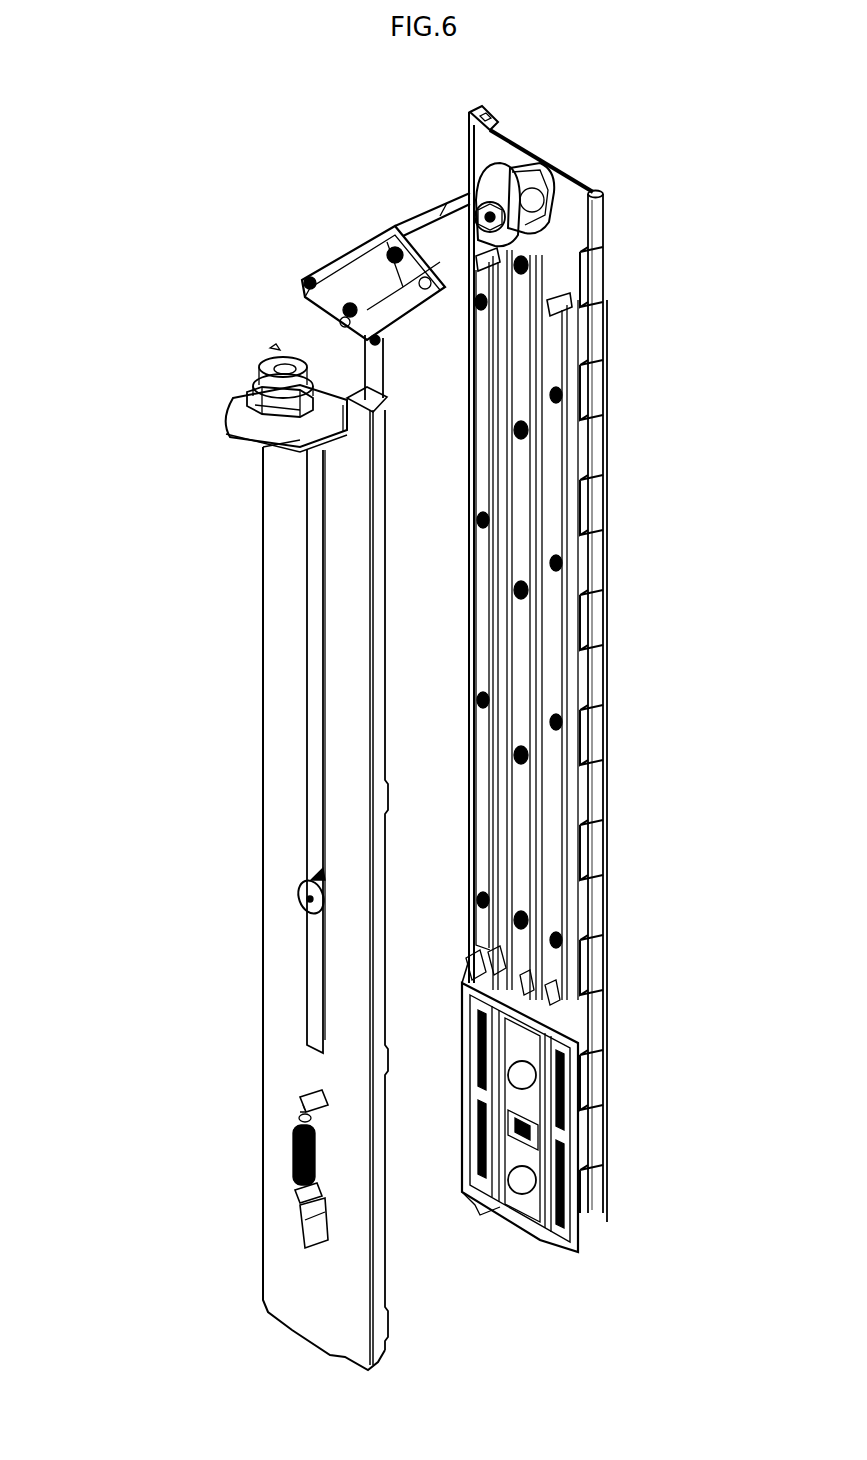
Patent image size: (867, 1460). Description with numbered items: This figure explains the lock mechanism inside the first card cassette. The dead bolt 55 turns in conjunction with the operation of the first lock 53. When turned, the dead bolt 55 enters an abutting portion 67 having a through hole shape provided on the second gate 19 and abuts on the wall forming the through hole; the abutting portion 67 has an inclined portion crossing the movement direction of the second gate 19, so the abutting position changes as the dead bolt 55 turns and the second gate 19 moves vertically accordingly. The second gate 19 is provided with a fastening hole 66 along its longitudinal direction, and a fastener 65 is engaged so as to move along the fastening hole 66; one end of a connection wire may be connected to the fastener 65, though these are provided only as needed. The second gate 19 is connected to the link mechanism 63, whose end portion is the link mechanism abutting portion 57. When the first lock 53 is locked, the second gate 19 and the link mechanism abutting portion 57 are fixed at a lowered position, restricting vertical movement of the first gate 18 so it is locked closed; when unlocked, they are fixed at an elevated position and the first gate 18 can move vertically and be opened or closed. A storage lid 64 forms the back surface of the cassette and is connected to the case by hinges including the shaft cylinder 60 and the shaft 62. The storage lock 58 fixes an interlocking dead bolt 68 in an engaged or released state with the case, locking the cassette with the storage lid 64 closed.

The first gate 18 is at (527, 1150).
The second gate 19 is at (307, 1298).
The first lock 53 is at (262, 372).
The dead bolt 55 is at (233, 432).
The link mechanism abutting portion 57 is at (537, 988).
The storage lock 58 is at (527, 187).
The shaft cylinder 60 is at (597, 230).
The shaft 62 is at (593, 280).
The link mechanism 63 is at (417, 213).
The storage lid 64 is at (490, 140).
The fastener 65 is at (300, 896).
The fastening hole 66 is at (303, 823).
The abutting portion 67 is at (288, 412).
The interlocking dead bolt 68 is at (490, 187).